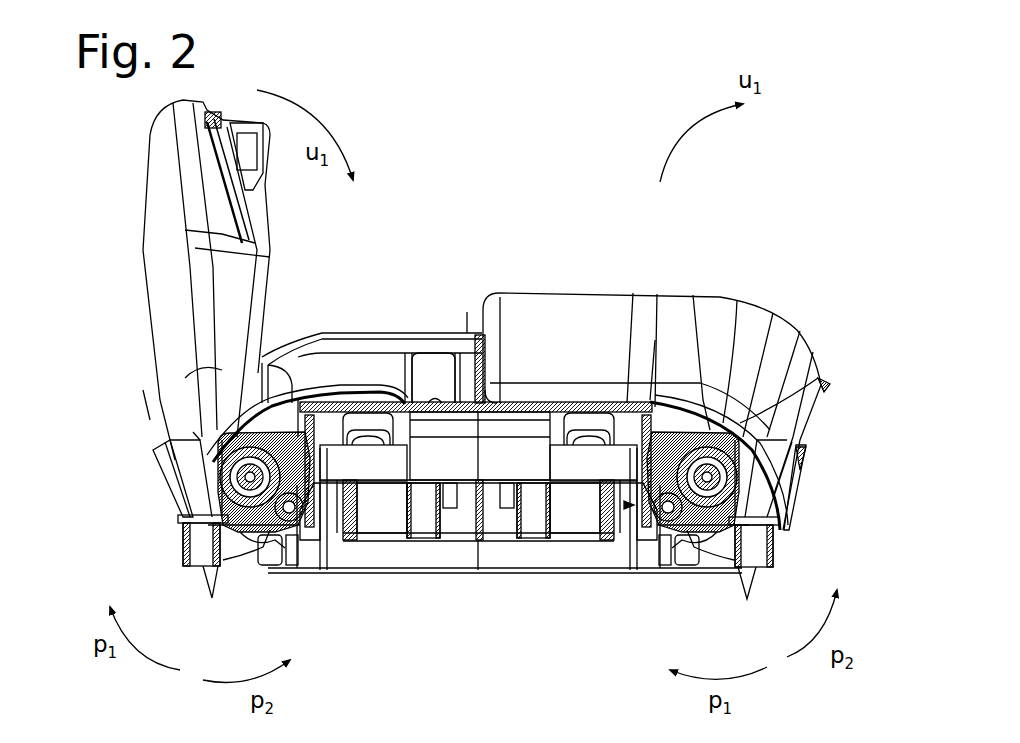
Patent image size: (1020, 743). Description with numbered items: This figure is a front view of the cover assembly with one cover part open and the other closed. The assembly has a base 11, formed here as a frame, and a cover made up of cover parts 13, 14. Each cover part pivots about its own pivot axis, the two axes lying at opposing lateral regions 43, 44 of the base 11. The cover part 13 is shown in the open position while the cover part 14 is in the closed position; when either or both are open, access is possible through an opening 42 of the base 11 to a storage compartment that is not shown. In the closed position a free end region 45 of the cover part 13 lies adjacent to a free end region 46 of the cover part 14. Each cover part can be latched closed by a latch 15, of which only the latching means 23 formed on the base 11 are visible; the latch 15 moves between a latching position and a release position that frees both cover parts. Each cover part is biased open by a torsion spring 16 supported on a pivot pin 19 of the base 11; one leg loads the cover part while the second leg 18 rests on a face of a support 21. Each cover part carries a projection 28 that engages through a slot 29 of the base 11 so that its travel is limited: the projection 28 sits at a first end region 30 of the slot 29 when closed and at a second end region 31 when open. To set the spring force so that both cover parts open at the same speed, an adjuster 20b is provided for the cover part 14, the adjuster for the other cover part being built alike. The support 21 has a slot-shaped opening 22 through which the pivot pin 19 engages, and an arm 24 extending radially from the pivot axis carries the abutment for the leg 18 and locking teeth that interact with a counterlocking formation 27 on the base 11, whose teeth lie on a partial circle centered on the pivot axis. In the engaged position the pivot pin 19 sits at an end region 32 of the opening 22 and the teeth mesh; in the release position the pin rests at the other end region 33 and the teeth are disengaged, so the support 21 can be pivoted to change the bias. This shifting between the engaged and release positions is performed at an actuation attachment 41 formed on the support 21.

The base 11 is at (420, 348).
The cover part 13 is at (167, 222).
The cover part 14 is at (597, 317).
The latch 15 is at (467, 310).
The spring 16 is at (337, 548).
The second leg 18 is at (322, 545).
The pivot pin 19 is at (163, 440).
The adjuster 20b is at (375, 515).
The support 21 is at (203, 475).
The opening 22 is at (263, 400).
The latching means 23 is at (435, 362).
The arm 24 is at (333, 508).
The counterlocking formation 27 is at (273, 527).
The projection 28 is at (323, 400).
The slot 29 is at (190, 516).
The first end region 30 is at (203, 576).
The second end region 31 is at (298, 400).
The end region 32 is at (240, 418).
The end region 33 is at (320, 488).
The actuation attachment 41 is at (207, 440).
The opening 42 is at (376, 376).
The lateral region 43 is at (143, 387).
The lateral region 44 is at (827, 388).
The free end region 45 is at (157, 123).
The free end region 46 is at (493, 302).